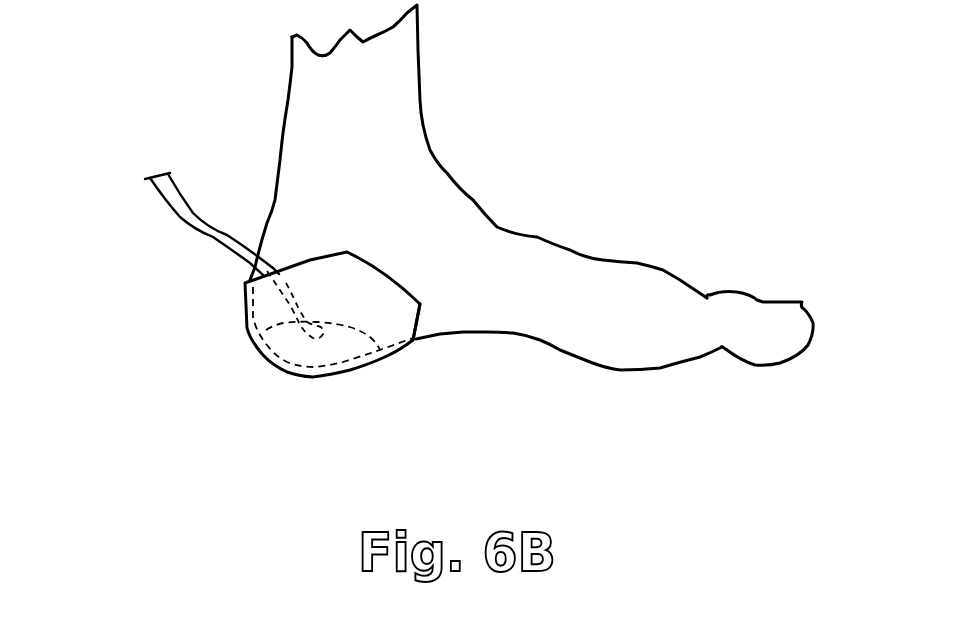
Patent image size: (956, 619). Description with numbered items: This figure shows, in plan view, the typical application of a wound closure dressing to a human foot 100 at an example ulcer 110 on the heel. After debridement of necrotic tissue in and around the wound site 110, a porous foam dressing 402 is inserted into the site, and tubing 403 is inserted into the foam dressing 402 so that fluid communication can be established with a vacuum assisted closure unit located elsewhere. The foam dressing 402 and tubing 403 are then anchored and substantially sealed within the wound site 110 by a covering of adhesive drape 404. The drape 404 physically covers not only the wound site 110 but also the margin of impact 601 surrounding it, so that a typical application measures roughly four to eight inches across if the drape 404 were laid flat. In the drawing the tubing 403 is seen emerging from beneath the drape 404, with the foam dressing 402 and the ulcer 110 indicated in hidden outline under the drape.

The human foot 100 is at (397, 113).
The margin of impact 601 is at (320, 282).
The porous foam dressing 402 is at (278, 338).
The ulcer 110 is at (323, 353).
The adhesive drape 404 is at (392, 310).
The tubing 403 is at (182, 220).